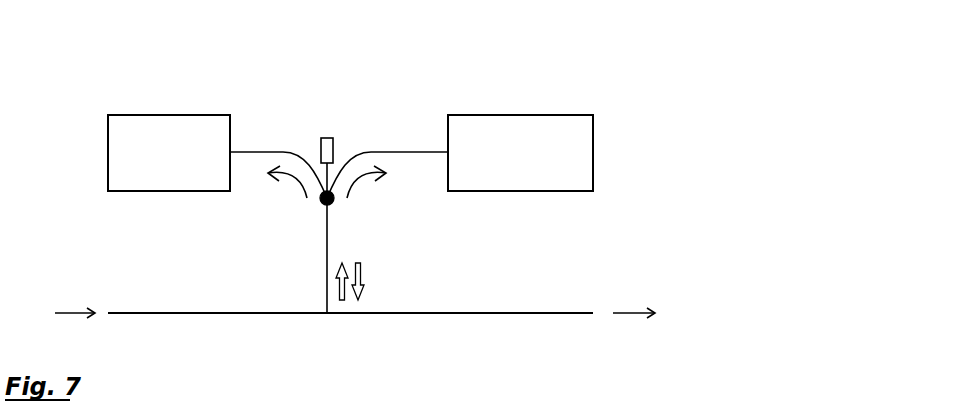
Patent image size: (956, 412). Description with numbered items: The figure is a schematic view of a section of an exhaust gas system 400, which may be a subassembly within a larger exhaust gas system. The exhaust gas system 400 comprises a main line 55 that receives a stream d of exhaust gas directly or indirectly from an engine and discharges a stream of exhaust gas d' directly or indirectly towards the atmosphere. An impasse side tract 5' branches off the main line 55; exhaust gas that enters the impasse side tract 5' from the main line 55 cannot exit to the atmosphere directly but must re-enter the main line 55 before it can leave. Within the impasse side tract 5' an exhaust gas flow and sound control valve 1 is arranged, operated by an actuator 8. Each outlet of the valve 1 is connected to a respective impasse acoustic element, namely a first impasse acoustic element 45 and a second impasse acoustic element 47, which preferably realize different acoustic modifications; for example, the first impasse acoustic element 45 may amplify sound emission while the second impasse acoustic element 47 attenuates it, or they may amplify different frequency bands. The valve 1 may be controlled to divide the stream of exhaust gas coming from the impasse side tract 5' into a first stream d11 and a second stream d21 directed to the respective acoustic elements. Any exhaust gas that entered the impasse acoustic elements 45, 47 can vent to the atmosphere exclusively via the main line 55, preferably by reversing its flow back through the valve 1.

The exhaust gas system 400 is at (398, 112).
The first impasse acoustic element 45 is at (188, 115).
The second impasse acoustic element 47 is at (505, 115).
The actuator 8 is at (327, 138).
The exhaust gas flow and sound control valve 1 is at (332, 203).
The first stream d11 is at (298, 182).
The second stream d21 is at (361, 182).
The impasse side tract 5' is at (307, 255).
The main line 55 is at (225, 313).
The stream of exhaust gas d is at (79, 286).
The stream of exhaust gas d' is at (619, 286).